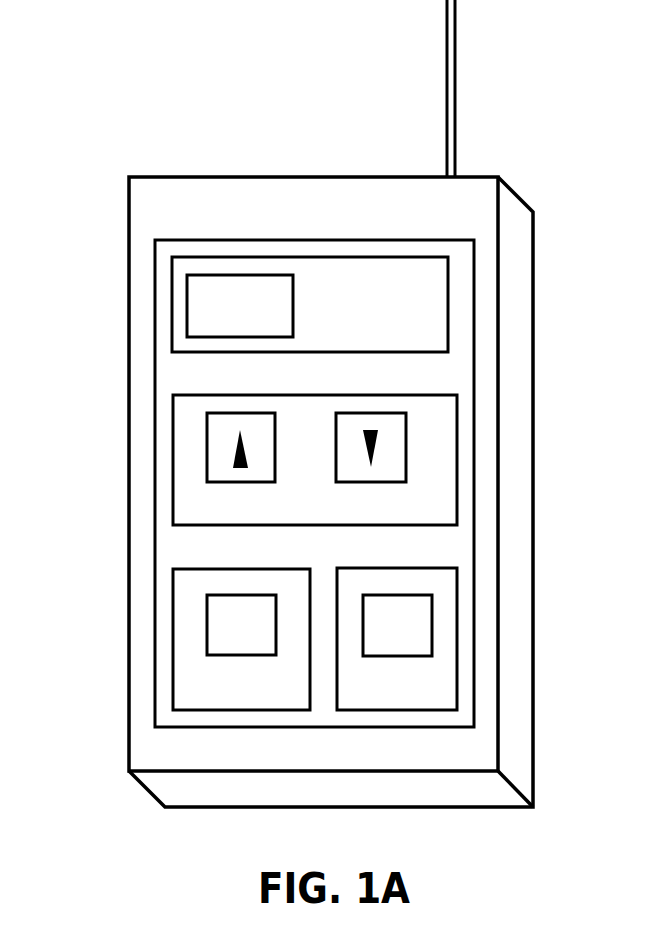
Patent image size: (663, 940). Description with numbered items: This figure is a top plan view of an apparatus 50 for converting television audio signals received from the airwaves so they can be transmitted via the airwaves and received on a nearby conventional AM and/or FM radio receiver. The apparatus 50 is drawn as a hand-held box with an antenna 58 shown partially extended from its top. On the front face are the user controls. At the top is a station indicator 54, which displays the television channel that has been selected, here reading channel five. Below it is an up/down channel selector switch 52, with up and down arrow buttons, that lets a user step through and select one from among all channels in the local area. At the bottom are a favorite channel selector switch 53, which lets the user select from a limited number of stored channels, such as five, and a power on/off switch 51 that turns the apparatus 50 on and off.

The apparatus 50 is at (108, 153).
The antenna 58 is at (497, 88).
The station indicator 54 is at (402, 275).
The up/down channel selector switch 52 is at (247, 436).
The favorite channel selector switch 53 is at (173, 632).
The power on/off switch 51 is at (484, 632).